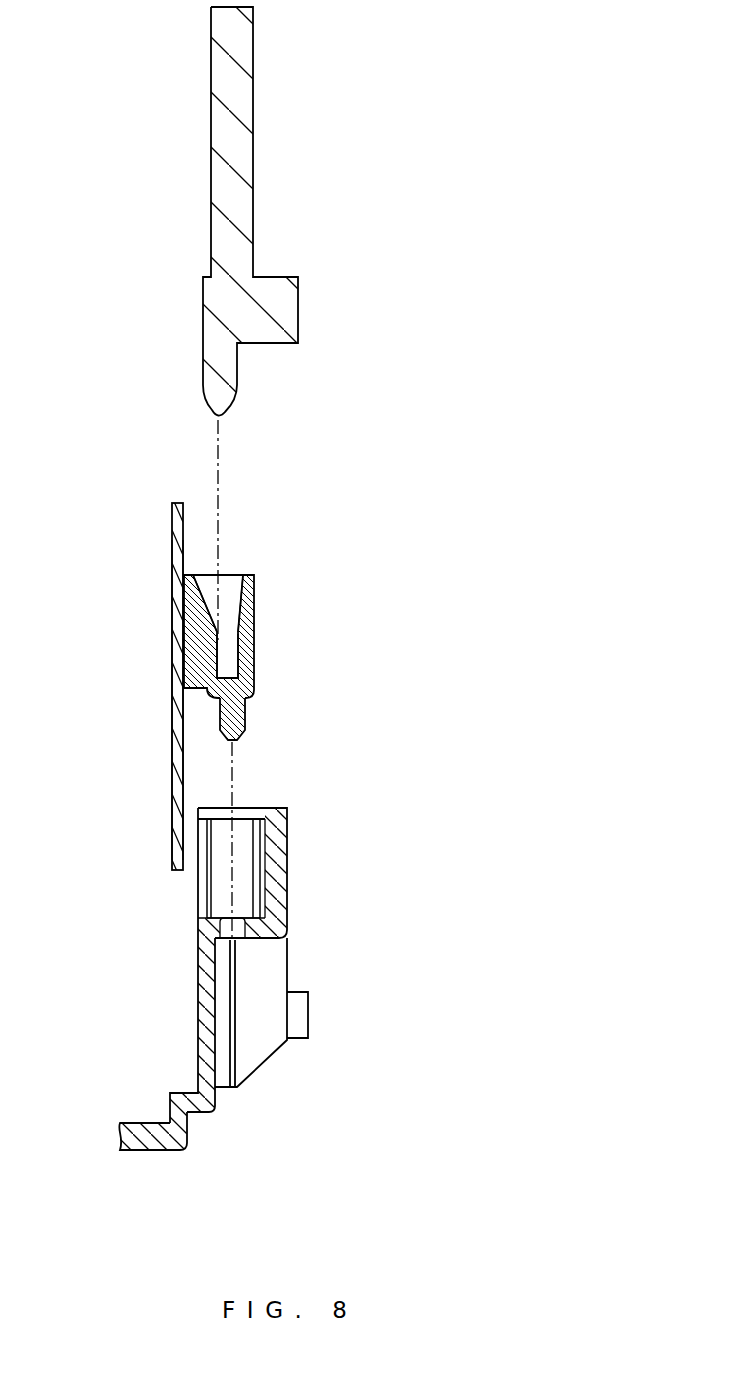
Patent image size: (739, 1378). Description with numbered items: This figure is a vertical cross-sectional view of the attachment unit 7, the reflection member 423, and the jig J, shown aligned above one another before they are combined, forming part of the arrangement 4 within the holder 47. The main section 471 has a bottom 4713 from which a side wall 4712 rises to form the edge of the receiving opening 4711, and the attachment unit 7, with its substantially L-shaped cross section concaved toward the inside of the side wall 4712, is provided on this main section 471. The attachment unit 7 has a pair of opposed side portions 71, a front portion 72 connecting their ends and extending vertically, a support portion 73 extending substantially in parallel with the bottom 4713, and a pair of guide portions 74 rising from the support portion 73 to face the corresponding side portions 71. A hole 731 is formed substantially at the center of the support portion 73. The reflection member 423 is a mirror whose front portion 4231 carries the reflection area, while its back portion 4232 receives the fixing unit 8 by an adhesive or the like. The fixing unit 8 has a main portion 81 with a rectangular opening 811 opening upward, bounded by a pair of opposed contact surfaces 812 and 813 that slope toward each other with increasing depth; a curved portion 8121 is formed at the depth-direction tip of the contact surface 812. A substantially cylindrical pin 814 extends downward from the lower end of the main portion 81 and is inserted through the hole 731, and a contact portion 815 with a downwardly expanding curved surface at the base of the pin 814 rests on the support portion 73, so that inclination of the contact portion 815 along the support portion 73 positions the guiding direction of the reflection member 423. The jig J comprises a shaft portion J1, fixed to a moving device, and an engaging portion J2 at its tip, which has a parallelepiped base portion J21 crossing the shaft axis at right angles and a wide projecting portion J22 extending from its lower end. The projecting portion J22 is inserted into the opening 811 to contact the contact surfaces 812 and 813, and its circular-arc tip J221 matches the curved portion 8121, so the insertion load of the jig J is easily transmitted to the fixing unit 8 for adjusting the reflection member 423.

The jig J is at (203, 211).
The shaft portion J1 is at (243, 102).
The engaging portion J2 is at (202, 346).
The base portion J21 is at (227, 313).
The projecting portion J22 is at (225, 379).
The tip J221 is at (222, 403).
The connector assembly 4 is at (448, 425).
The reflection member 423 is at (187, 679).
The front portion 4231 is at (172, 687).
The back portion 4232 is at (183, 524).
The fixing unit 8 is at (342, 667).
The main portion 81 is at (223, 644).
The opening 811 is at (223, 602).
The contact surface 812 is at (184, 593).
The contact surface 813 is at (254, 592).
The curved portion 8121 is at (222, 620).
The pin 814 is at (245, 728).
The contact portion 815 is at (248, 697).
The attachment unit 7 is at (165, 883).
The side portion 71 is at (186, 876).
The front portion 72 is at (288, 847).
The support portion 73 is at (298, 941).
The hole 731 is at (245, 933).
The guide portion 74 is at (212, 912).
The holder 47 is at (238, 972).
The main section 471 is at (238, 972).
The receiving opening 4711 is at (280, 810).
The side wall 4712 is at (198, 1003).
The bottom 4713 is at (127, 1123).